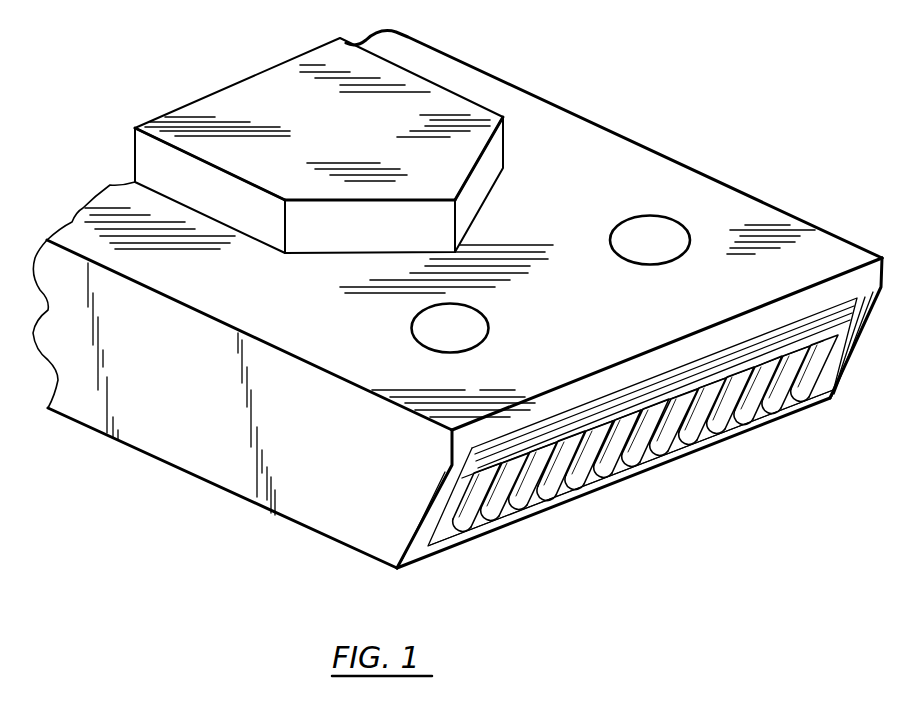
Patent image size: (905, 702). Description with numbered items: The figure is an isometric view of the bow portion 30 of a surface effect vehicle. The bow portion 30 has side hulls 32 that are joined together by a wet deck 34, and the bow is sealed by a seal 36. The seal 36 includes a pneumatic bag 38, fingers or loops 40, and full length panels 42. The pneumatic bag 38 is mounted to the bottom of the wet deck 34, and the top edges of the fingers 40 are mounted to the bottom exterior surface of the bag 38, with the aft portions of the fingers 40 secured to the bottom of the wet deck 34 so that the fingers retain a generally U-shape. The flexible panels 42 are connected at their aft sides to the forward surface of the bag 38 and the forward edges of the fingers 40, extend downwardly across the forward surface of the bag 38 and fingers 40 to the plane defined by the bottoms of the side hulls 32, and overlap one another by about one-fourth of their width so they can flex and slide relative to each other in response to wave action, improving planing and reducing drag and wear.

The bow portion 30 is at (539, 71).
The side hulls 32 is at (165, 440).
The wet deck 34 is at (743, 330).
The seal 36 is at (664, 467).
The pneumatic bag 38 is at (558, 433).
The fingers 40 is at (465, 503).
The full length panels 42 is at (620, 473).